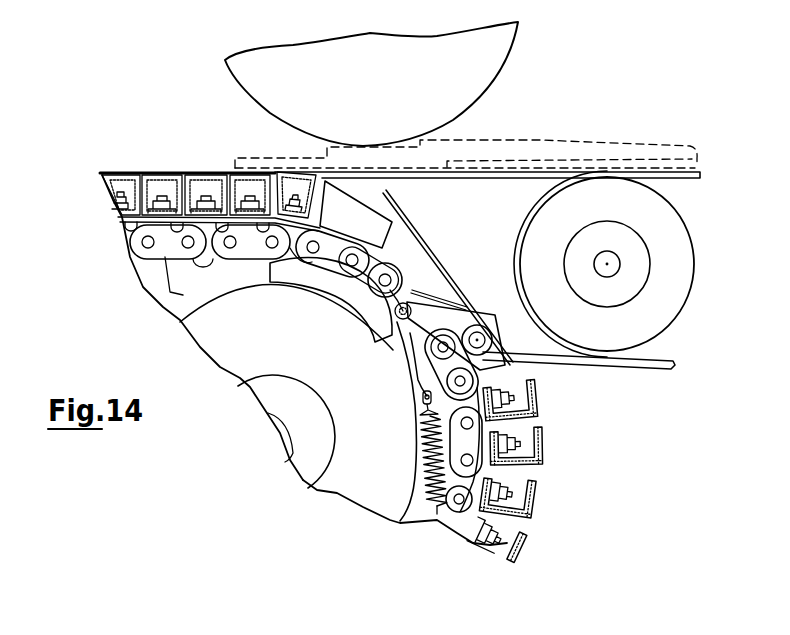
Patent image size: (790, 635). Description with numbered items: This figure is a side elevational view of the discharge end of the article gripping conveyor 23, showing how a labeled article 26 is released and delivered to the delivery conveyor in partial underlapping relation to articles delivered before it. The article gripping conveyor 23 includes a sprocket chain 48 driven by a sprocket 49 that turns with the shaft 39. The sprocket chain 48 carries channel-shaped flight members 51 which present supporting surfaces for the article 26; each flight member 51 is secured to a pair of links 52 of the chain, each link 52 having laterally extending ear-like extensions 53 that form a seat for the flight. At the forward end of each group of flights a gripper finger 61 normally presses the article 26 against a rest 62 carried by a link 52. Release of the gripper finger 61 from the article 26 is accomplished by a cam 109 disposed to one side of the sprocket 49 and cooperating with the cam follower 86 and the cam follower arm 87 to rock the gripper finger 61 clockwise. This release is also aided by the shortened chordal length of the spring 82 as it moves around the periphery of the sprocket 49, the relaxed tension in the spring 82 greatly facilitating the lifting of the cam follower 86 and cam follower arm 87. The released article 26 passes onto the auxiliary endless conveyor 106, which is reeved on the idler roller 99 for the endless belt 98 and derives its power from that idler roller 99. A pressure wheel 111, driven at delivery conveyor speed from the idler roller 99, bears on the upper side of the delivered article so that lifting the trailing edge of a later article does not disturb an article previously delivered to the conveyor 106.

The pressure wheel 111 is at (503, 61).
The article gripping conveyor 23 is at (197, 179).
The flight member 51 is at (178, 169).
The article 26 is at (540, 147).
The endless belt 98 is at (650, 175).
The auxiliary endless conveyor 106 is at (462, 171).
The idler roller 99 is at (615, 343).
The rest 62 is at (370, 217).
The ear-like extension 53 is at (152, 222).
The link 52 is at (180, 252).
The sprocket chain 48 is at (213, 254).
The sprocket 49 is at (360, 493).
The shaft 39 is at (292, 437).
The cam 109 is at (333, 282).
The gripper finger 61 is at (440, 267).
The cam follower arm 87 is at (452, 327).
The cam follower 86 is at (398, 353).
The spring 82 is at (420, 443).